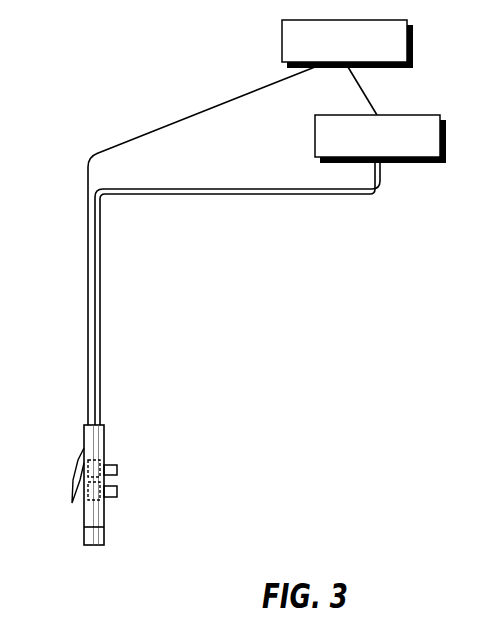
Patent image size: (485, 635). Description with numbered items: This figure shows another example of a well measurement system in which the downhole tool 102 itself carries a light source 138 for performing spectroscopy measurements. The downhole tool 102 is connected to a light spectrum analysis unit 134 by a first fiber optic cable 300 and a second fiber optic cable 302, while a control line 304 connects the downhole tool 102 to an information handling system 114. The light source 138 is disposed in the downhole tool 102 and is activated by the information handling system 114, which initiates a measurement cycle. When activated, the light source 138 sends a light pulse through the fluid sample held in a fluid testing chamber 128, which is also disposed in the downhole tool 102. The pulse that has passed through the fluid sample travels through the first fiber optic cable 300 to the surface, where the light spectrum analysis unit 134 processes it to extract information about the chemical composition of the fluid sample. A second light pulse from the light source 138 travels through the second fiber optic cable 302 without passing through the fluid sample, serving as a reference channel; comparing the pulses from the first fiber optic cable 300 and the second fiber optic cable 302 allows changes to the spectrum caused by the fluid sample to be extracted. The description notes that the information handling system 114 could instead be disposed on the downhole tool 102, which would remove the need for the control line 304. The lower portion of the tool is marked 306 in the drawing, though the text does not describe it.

The downhole tool 102 is at (114, 455).
The information handling system 114 is at (365, 52).
The fluid testing chamber 128 is at (96, 458).
The light spectrum analysis unit 134 is at (398, 147).
The light source 138 is at (95, 501).
The first fiber optic cable 300 is at (238, 189).
The second fiber optic cable 302 is at (236, 195).
The control line 304 is at (215, 106).
The distal tip 306 is at (114, 514).